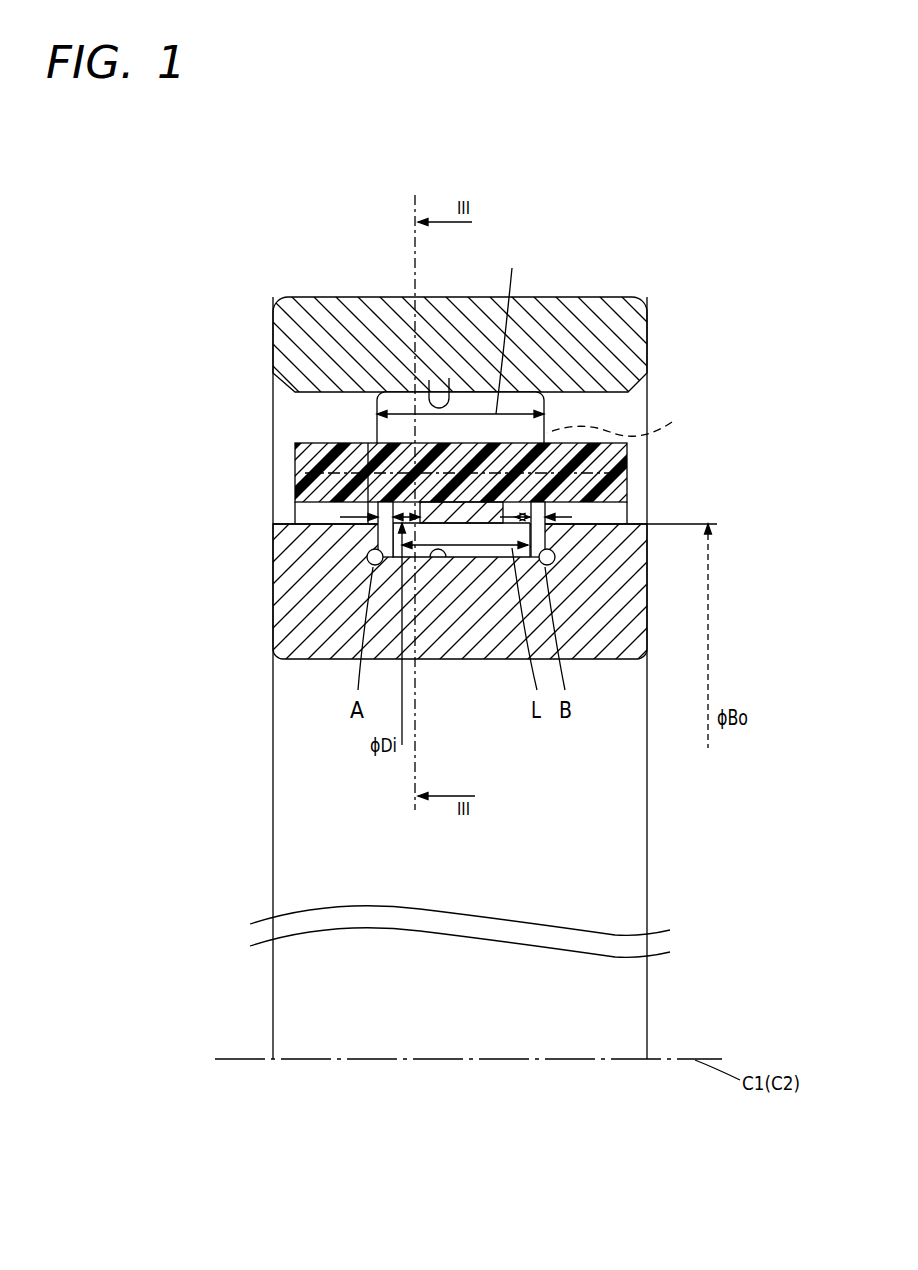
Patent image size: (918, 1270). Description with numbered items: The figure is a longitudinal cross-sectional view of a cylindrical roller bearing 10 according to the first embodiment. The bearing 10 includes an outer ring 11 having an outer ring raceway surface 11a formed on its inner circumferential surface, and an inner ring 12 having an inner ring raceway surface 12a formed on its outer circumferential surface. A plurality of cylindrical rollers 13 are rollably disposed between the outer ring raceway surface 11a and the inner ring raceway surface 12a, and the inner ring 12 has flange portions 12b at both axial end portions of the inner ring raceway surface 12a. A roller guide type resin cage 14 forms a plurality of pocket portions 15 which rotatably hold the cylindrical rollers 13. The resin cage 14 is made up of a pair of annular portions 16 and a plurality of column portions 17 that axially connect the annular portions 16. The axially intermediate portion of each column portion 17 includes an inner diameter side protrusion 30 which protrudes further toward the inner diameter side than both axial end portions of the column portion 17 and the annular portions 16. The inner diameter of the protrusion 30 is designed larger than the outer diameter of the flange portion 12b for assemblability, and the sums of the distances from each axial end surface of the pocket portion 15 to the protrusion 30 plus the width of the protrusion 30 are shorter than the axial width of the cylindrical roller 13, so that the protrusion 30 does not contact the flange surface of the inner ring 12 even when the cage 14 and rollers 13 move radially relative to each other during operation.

The cylindrical roller bearing 10 is at (575, 292).
The outer ring 11 is at (638, 328).
The outer ring raceway surface 11a is at (429, 380).
The inner ring 12 is at (640, 580).
The inner ring raceway surface 12a is at (450, 562).
The flange portion 12b is at (627, 532).
The cylindrical roller 13 is at (523, 400).
The resin cage 14 is at (633, 456).
The pocket portion 15 is at (621, 420).
The annular portion 16 is at (297, 470).
The column portion 17 is at (402, 470).
The inner diameter side protrusion 30 is at (483, 560).